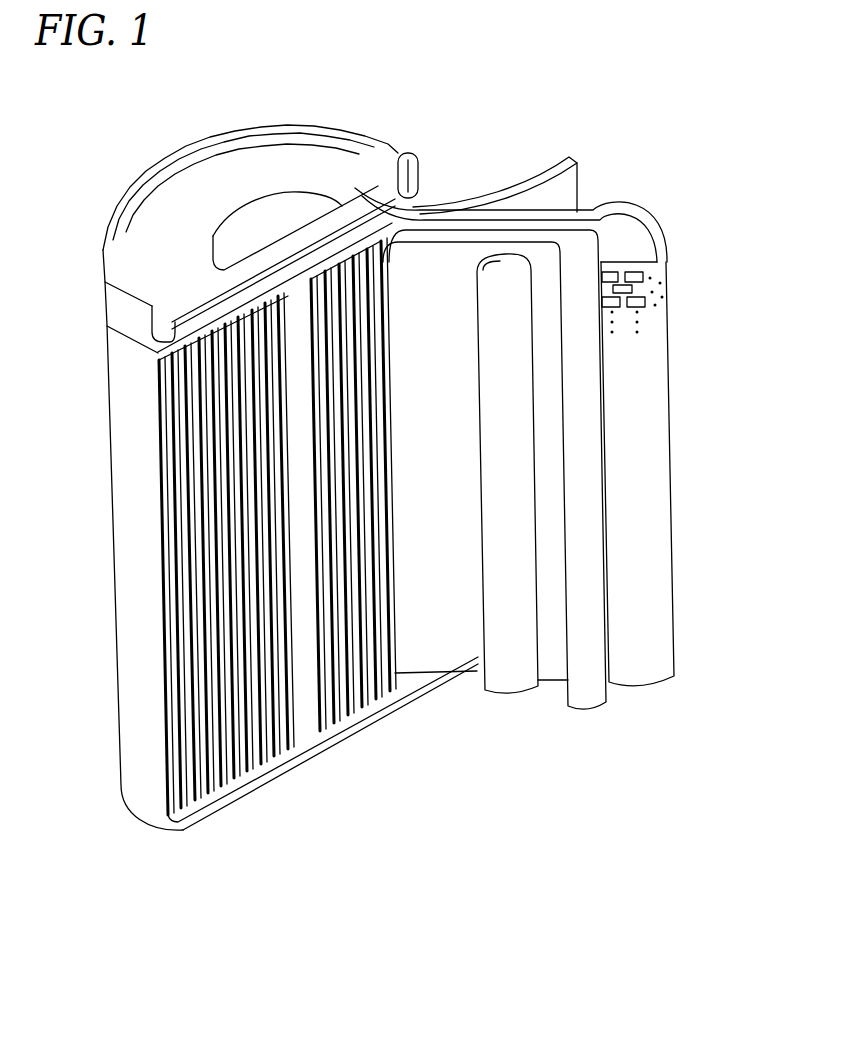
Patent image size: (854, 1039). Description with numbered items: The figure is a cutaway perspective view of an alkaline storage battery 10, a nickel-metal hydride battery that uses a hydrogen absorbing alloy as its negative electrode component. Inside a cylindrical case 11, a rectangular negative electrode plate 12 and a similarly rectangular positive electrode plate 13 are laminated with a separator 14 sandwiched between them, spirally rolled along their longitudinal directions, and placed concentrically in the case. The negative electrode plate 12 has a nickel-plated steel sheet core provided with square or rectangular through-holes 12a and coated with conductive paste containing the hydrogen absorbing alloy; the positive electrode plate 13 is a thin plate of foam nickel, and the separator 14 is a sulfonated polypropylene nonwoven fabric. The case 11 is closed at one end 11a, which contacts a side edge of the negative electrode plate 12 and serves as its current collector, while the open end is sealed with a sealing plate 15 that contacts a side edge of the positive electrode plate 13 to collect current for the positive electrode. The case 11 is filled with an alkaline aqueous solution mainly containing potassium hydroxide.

The alkaline storage battery 10 is at (128, 152).
The cylindrical case 11 is at (147, 608).
The closed end 11a is at (302, 767).
The negative electrode plate 12 is at (645, 405).
The through-holes 12a is at (650, 277).
The positive electrode plate 13 is at (513, 670).
The separator 14 is at (587, 550).
The sealing plate 15 is at (278, 210).